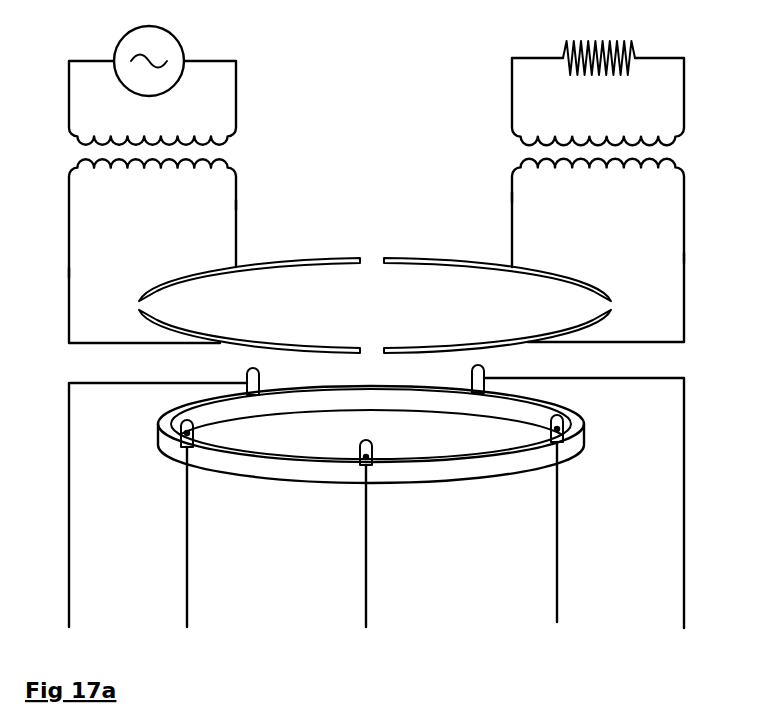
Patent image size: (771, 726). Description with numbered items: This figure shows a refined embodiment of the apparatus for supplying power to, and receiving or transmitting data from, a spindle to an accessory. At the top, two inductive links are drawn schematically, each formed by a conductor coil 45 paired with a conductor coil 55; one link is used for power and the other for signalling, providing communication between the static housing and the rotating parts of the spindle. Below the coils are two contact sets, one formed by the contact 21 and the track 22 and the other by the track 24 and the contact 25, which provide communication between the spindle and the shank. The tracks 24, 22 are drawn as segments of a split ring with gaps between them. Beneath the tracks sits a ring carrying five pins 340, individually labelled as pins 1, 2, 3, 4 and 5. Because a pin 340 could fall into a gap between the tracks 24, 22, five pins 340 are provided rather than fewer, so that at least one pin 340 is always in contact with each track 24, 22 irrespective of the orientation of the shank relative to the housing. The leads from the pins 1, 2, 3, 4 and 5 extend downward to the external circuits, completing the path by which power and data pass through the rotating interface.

The conductor coil 45 is at (145, 137).
The conductor coil 55 is at (148, 173).
The contact set 25 is at (236, 205).
The contact set 21 is at (512, 197).
The track 24 is at (304, 262).
The track 22 is at (487, 260).
The pin 340 is at (247, 380).
The pin 1 is at (158, 506).
The pin 2 is at (195, 538).
The pin 3 is at (375, 547).
The pin 4 is at (566, 535).
The pin 5 is at (595, 505).